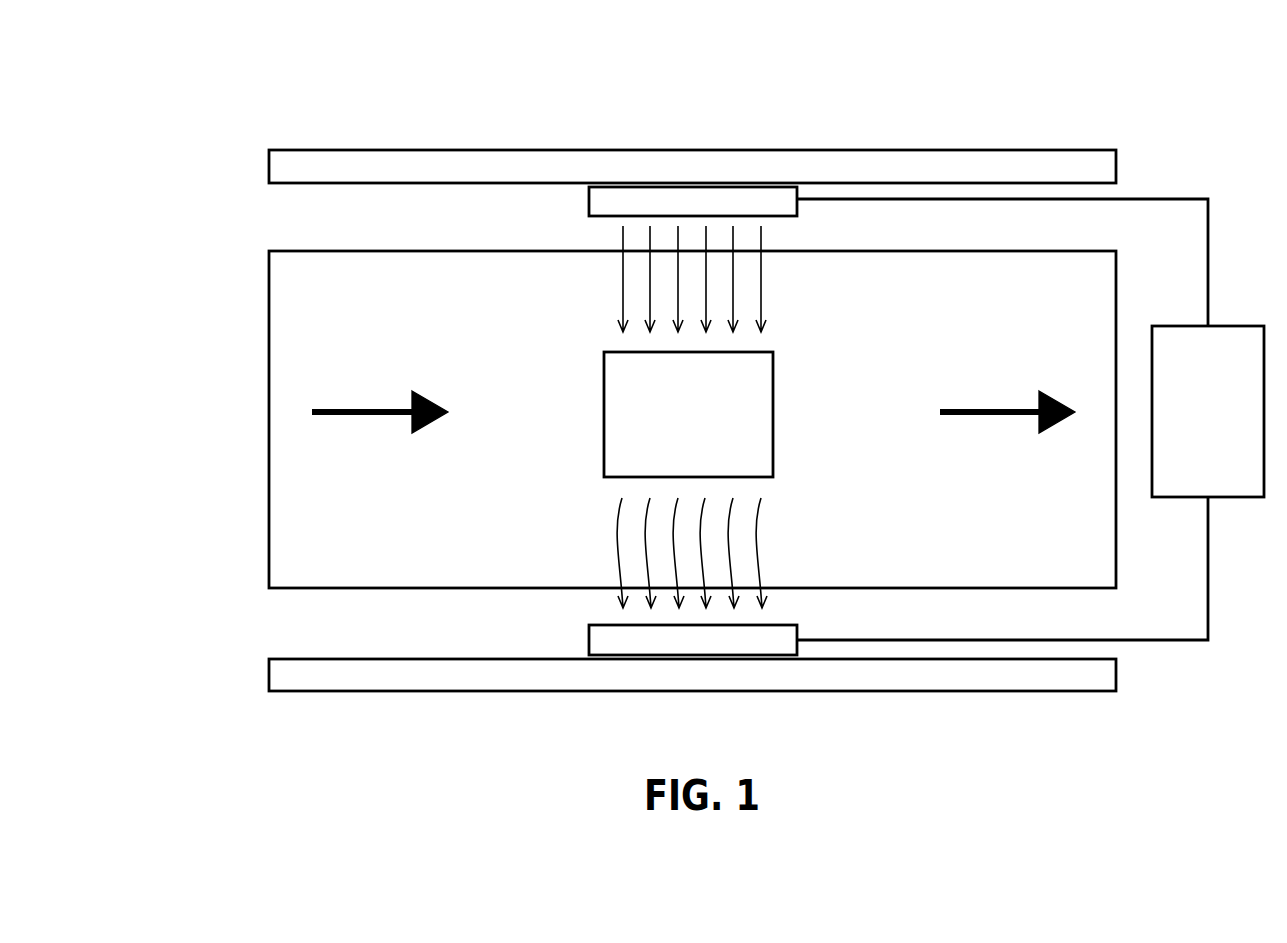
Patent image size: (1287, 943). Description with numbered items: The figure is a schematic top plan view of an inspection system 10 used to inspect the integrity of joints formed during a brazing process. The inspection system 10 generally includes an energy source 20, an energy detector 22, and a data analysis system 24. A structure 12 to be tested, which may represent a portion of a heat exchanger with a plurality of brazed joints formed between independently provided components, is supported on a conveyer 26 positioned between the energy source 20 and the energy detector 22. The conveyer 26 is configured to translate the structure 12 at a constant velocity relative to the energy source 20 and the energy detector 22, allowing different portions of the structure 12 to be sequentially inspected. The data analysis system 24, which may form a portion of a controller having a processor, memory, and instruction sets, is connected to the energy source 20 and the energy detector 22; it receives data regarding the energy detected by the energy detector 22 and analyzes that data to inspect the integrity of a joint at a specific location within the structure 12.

The inspection system 10 is at (372, 123).
The structure 12 is at (774, 363).
The energy source 20 is at (692, 190).
The energy detector 22 is at (714, 640).
The data analysis system 24 is at (1224, 499).
The conveyer 26 is at (472, 251).